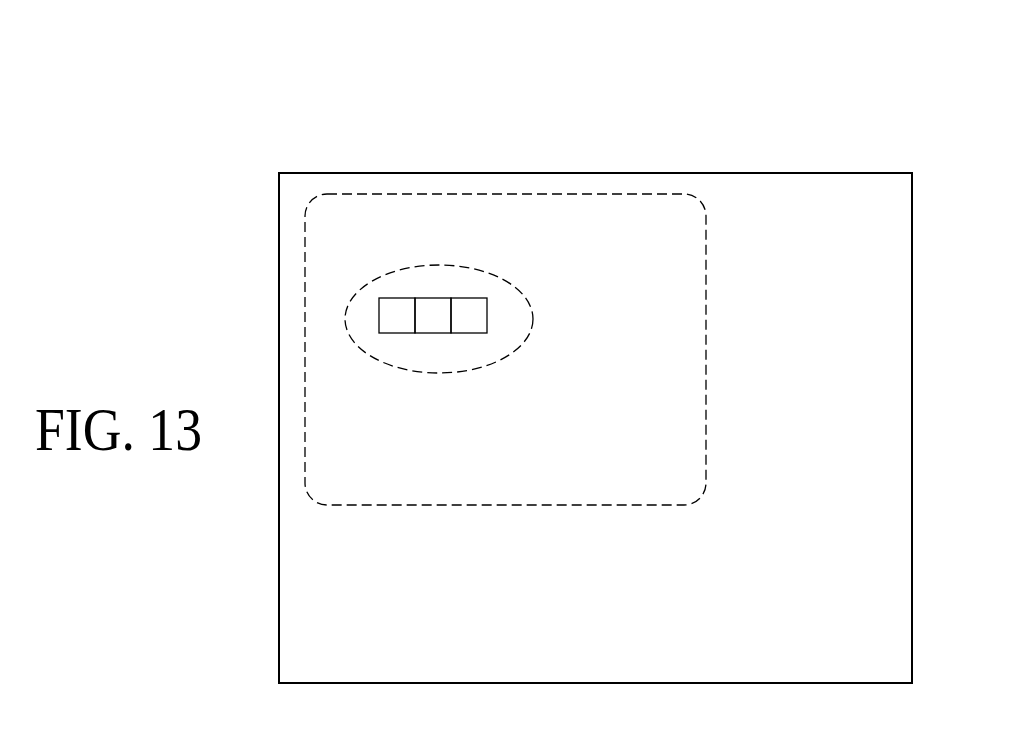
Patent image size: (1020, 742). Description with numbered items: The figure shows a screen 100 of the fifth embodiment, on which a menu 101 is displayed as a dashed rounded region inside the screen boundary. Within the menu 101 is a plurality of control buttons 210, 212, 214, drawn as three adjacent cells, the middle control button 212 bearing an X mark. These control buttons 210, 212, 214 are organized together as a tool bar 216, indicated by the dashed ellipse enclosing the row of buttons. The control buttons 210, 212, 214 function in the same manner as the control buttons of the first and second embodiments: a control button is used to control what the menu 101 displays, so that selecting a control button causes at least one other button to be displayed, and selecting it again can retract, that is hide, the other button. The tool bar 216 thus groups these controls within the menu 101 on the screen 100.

The screen 100 is at (792, 128).
The menu 101 is at (708, 332).
The control button 210 is at (395, 334).
The control button 212 is at (432, 334).
The control button 214 is at (470, 334).
The tool bar 216 is at (506, 282).